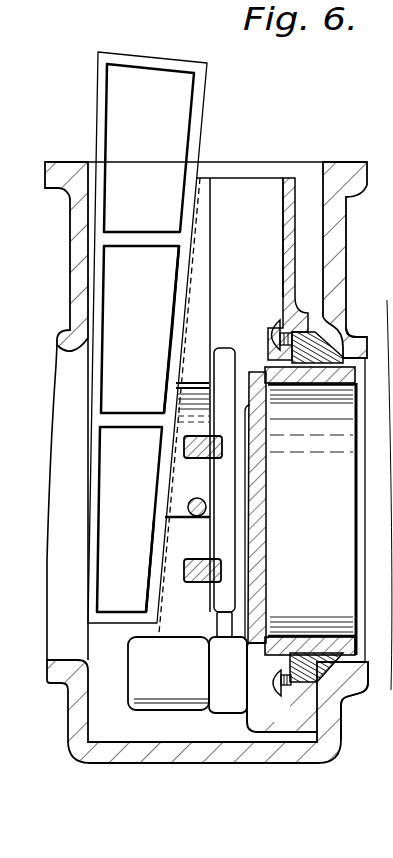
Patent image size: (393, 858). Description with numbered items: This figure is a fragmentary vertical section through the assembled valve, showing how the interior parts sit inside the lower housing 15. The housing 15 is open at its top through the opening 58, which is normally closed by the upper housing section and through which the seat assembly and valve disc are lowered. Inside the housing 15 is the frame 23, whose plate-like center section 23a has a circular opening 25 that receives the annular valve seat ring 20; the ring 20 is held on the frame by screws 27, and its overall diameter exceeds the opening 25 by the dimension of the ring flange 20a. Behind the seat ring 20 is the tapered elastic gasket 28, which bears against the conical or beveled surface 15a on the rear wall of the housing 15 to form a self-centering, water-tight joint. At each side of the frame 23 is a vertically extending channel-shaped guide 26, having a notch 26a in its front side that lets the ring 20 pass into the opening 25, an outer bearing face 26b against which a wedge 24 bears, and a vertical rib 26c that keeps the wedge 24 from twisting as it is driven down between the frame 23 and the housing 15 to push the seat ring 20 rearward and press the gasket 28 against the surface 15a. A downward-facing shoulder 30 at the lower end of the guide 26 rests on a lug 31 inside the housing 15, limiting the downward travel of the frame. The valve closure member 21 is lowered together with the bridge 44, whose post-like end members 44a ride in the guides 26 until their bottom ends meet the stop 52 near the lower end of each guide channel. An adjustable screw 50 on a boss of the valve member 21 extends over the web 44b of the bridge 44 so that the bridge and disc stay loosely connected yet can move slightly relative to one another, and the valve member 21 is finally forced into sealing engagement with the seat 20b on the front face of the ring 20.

The housing 15 is at (224, 764).
The beveled surface 15a is at (344, 698).
The valve seat ring 20 is at (332, 642).
The ring flange 20a is at (289, 646).
The seat 20b is at (265, 624).
The valve closure member 21 is at (258, 467).
The frame 23 is at (284, 252).
The center section 23a is at (288, 209).
The wedge 24 is at (201, 114).
The circular opening 25 is at (292, 392).
The guide 26 is at (240, 183).
The notch 26a is at (173, 511).
The outer face 26b is at (180, 311).
The rib 26c is at (134, 586).
The screw 27 is at (276, 335).
The gasket 28 is at (348, 335).
The shoulder 30 is at (180, 639).
The lug 31 is at (143, 642).
The bridge 44 is at (182, 444).
The post 44a is at (227, 348).
The web 44b is at (219, 533).
The screw 50 is at (195, 497).
The stop 52 is at (228, 638).
The opening 58 is at (326, 171).